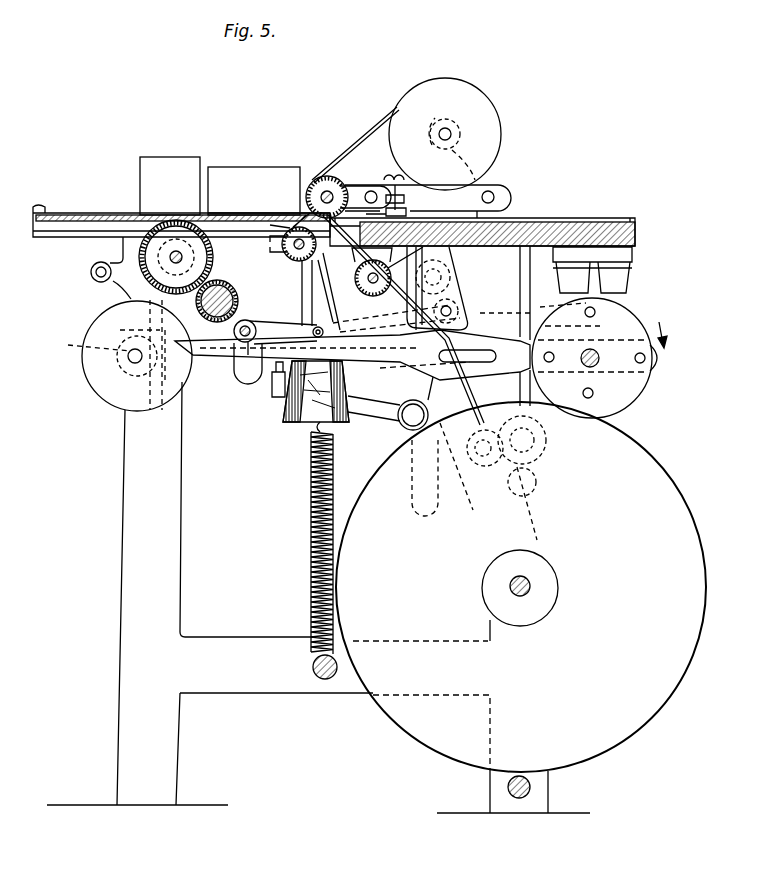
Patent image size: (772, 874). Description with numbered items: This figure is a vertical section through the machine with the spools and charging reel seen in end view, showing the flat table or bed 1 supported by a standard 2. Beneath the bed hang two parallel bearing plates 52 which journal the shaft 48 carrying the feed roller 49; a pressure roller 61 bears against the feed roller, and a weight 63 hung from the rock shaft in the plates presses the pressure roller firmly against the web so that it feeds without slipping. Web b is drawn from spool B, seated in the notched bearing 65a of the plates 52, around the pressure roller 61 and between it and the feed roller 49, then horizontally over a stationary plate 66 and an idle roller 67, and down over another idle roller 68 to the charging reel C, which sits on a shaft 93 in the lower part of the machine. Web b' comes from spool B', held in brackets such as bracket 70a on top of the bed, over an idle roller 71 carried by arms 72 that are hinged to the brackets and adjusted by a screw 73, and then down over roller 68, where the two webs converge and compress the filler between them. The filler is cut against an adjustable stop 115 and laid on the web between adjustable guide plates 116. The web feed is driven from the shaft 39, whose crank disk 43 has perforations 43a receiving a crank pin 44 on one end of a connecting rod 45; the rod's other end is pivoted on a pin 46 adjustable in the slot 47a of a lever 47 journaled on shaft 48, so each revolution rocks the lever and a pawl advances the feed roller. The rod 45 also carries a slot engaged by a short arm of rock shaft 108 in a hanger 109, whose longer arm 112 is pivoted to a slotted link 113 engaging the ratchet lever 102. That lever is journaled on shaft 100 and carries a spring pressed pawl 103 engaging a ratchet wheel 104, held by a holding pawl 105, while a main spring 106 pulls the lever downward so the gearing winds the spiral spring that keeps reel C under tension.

The table or bed 1 is at (548, 226).
The standard 2 is at (130, 618).
The shaft 39 is at (594, 350).
The crank disk 43 is at (630, 394).
The perforations 43a is at (598, 314).
The crank pin 44 is at (656, 358).
The connecting rod 45 is at (352, 355).
The crank pin 46 is at (233, 346).
The lever 47 is at (250, 382).
The longitudinal slot 47a is at (247, 366).
The shaft 48 is at (145, 218).
The feed roller 49 is at (176, 226).
The bearing plates 52 is at (98, 280).
The pressure roller 61 is at (236, 294).
The weight 63 is at (340, 420).
The bearing 65a is at (83, 340).
The stationary plate 66 is at (278, 224).
The idle roller 67 is at (312, 252).
The idle roller 68 is at (381, 278).
The bracket 70a is at (480, 193).
The idle roller 71 is at (328, 176).
The arms 72 is at (354, 188).
The screw 73 is at (404, 207).
The shaft 93 is at (520, 598).
The shaft 100 is at (548, 453).
The ratchet lever 102 is at (384, 423).
The spring pressed pawl 103 is at (480, 500).
The ratchet wheel 104 is at (560, 470).
The holding pawl 105 is at (540, 482).
The main spring 106 is at (311, 540).
The rock shaft 108 is at (278, 400).
The hanger 109 is at (386, 292).
The longer arm 112 is at (437, 288).
The link 113 is at (456, 330).
The stop 115 is at (160, 172).
The guide plates 116 is at (254, 191).
The web b is at (269, 178).
The web b' is at (387, 256).
The spool B is at (118, 355).
The spool B' is at (459, 134).
The charging reel C is at (521, 587).